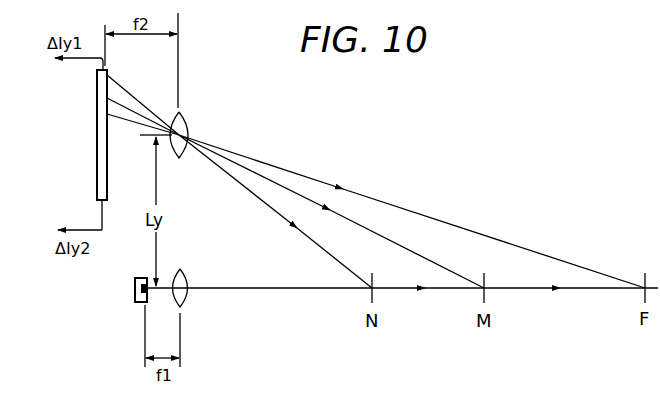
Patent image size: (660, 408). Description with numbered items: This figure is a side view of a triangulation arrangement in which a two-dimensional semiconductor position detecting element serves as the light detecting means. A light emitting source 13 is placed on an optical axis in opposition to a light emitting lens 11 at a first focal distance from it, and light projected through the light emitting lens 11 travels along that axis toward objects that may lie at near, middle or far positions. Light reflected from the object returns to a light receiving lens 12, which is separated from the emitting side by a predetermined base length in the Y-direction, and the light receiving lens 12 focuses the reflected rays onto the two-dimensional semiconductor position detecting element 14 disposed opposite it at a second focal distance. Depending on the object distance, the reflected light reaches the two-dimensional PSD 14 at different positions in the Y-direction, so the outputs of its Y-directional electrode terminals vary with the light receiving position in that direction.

The light emitting lens 11 is at (186, 276).
The light receiving lens 12 is at (188, 122).
The light emitting source 13 is at (135, 292).
The two-dimensional semiconductor position detecting element 14 is at (97, 128).